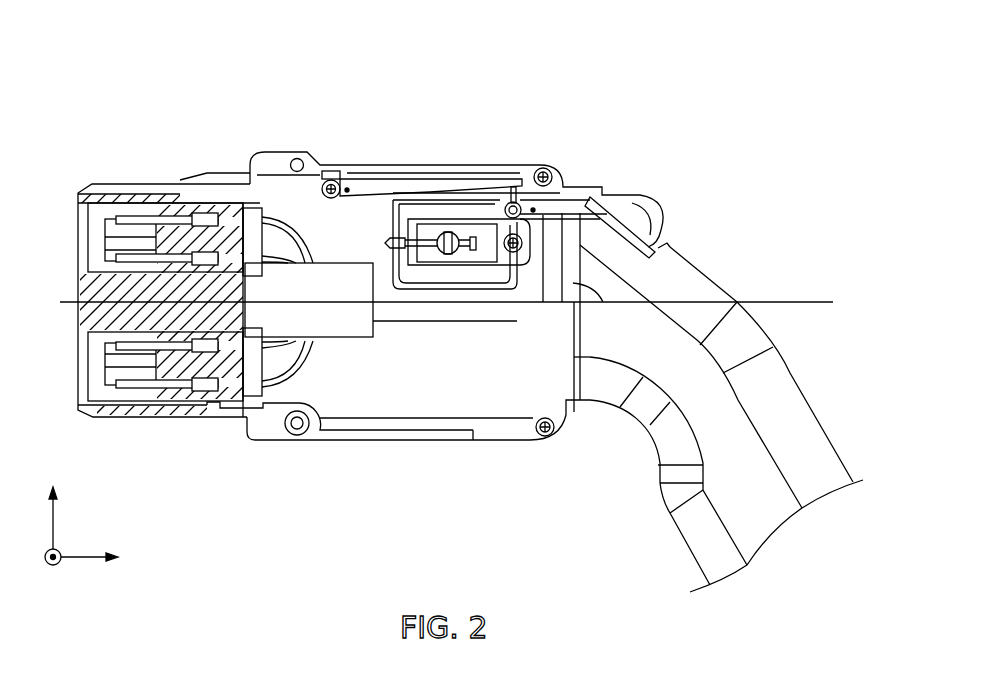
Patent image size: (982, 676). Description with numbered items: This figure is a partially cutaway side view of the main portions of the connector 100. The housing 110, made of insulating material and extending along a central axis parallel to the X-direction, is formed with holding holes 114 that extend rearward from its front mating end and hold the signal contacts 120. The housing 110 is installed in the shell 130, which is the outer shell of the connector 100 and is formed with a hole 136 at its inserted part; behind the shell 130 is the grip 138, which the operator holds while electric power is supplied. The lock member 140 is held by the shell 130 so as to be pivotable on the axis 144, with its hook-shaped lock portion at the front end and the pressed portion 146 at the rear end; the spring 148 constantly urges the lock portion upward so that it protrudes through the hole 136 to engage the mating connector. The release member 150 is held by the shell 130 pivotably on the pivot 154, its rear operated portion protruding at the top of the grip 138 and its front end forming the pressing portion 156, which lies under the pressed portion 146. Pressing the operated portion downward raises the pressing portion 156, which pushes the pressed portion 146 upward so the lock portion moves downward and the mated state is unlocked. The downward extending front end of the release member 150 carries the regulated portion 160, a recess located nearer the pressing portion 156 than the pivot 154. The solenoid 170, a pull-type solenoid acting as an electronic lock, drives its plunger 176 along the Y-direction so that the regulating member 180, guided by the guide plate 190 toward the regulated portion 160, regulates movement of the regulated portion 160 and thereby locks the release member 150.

The connector 100 is at (726, 94).
The housing 110 is at (107, 190).
The holding holes 114 is at (95, 243).
The signal contacts 120 is at (140, 205).
The shell 130 is at (283, 150).
The hole 136 is at (180, 180).
The grip 138 is at (783, 383).
The lock member 140 is at (205, 180).
The axis 144 is at (340, 174).
The pressed portion 146 is at (412, 180).
The spring 148 is at (321, 171).
The release member 150 is at (623, 200).
The pivot 154 is at (513, 195).
The pressing portion 156 is at (414, 204).
The regulated portion 160 is at (382, 242).
The solenoid 170 is at (481, 273).
The plunger 176 is at (460, 253).
The regulating member 180 is at (417, 262).
The guide plate 190 is at (434, 253).